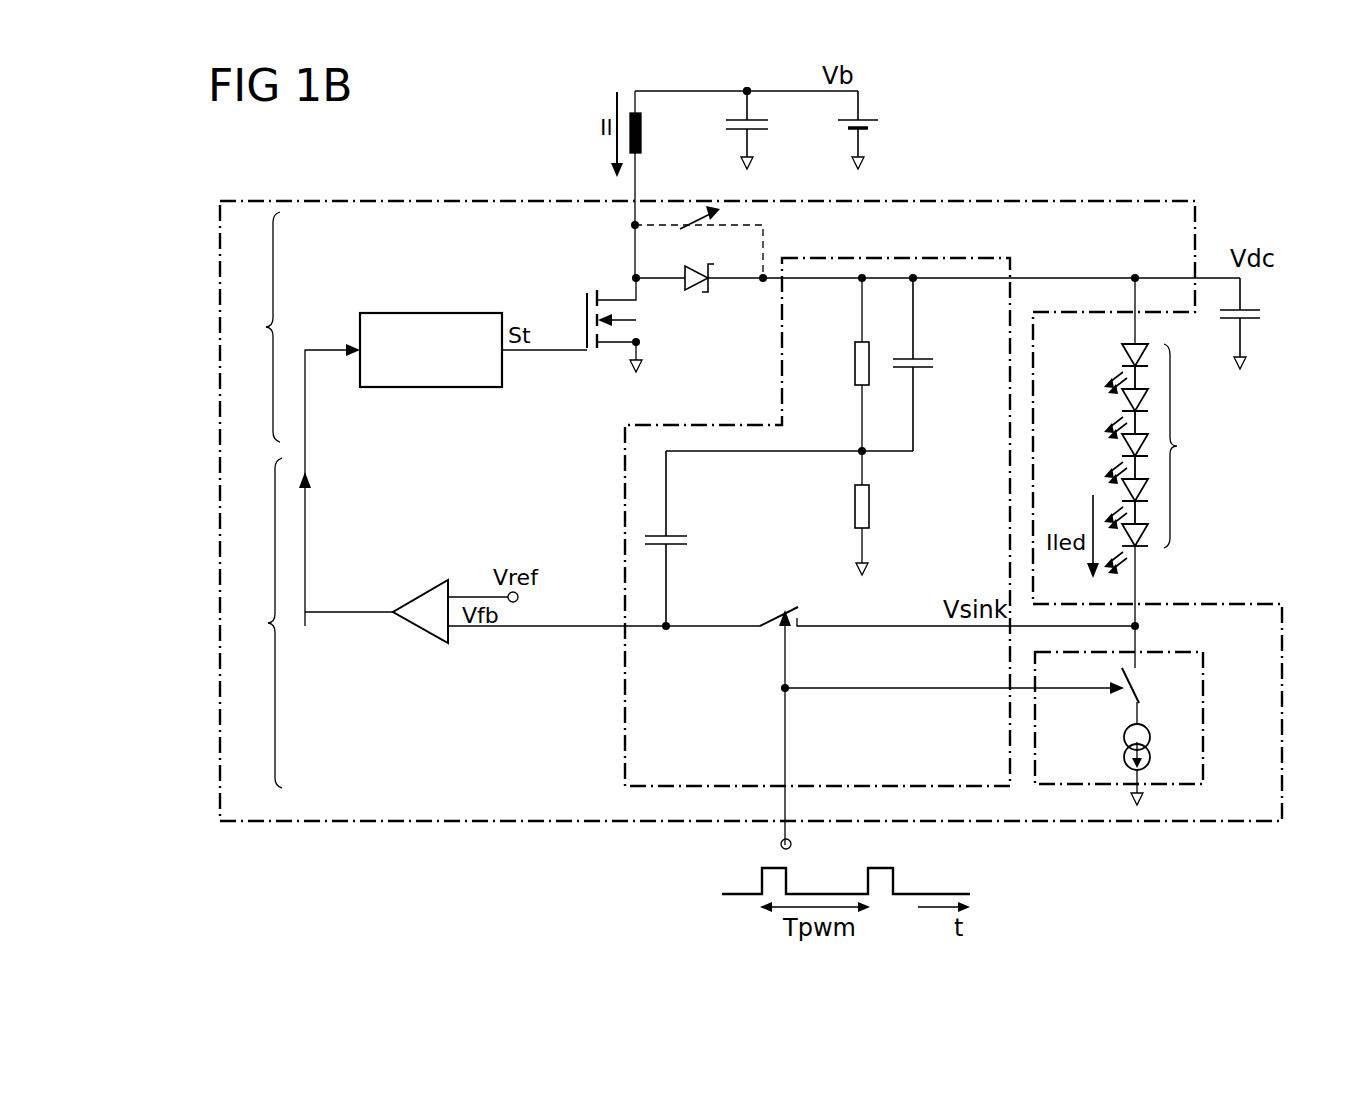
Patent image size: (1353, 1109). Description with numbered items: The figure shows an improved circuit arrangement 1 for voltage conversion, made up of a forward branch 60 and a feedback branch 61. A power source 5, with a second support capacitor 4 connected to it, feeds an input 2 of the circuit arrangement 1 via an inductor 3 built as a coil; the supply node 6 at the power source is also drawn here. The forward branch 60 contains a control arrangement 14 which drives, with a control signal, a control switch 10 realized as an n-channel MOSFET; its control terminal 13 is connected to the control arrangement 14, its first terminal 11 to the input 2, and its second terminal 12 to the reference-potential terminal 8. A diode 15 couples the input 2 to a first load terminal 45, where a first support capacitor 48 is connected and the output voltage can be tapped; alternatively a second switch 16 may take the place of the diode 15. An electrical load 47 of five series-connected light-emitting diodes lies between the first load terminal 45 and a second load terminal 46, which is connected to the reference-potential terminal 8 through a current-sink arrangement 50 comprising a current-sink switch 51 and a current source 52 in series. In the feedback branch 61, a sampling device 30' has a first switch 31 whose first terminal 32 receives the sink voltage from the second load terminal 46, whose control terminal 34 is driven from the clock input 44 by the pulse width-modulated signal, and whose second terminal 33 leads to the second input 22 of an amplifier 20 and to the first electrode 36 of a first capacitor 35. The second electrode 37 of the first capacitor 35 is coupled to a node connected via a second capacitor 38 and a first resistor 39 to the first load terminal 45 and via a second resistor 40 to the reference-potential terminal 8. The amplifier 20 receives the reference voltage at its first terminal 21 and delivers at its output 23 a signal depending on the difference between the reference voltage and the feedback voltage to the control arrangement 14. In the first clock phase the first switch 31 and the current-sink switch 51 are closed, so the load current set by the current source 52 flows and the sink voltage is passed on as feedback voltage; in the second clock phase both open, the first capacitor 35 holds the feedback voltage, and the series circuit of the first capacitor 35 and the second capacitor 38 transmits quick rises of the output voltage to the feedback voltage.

The circuit arrangement 1 is at (452, 200).
The input 2 is at (632, 226).
The inductor 3 is at (642, 135).
The second support capacitor 4 is at (770, 126).
The power source 5 is at (862, 118).
The supply node 6 is at (745, 94).
The reference-potential terminal 8 is at (750, 166).
The control switch 10 is at (572, 310).
The first terminal 11 is at (634, 290).
The second terminal 12 is at (642, 351).
The control terminal 13 is at (578, 352).
The control arrangement 14 is at (422, 313).
The diode 15 is at (700, 292).
The second switch 16 is at (695, 226).
The amplifier 20 is at (422, 594).
The first terminal 21 is at (451, 594).
The second input 22 is at (452, 638).
The output 23 is at (400, 618).
The sampling device 30' is at (780, 522).
The first switch 31 is at (780, 614).
The first terminal 32 is at (818, 624).
The second terminal 33 is at (758, 630).
The control terminal 34 is at (790, 668).
The first capacitor 35 is at (690, 540).
The first electrode 36 is at (670, 548).
The second electrode 37 is at (670, 532).
The second capacitor 38 is at (926, 370).
The first resistor 39 is at (855, 364).
The second resistor 40 is at (855, 508).
The clock input 44 is at (792, 845).
The first load terminal 45 is at (1134, 272).
The second load terminal 46 is at (1150, 626).
The electrical load 47 is at (1157, 452).
The first support capacitor 48 is at (1264, 314).
The current-sink arrangement 50 is at (1206, 714).
The current-sink switch 51 is at (1140, 696).
The current source 52 is at (1124, 758).
The forward branch 60 is at (257, 327).
The feedback branch 61 is at (258, 623).